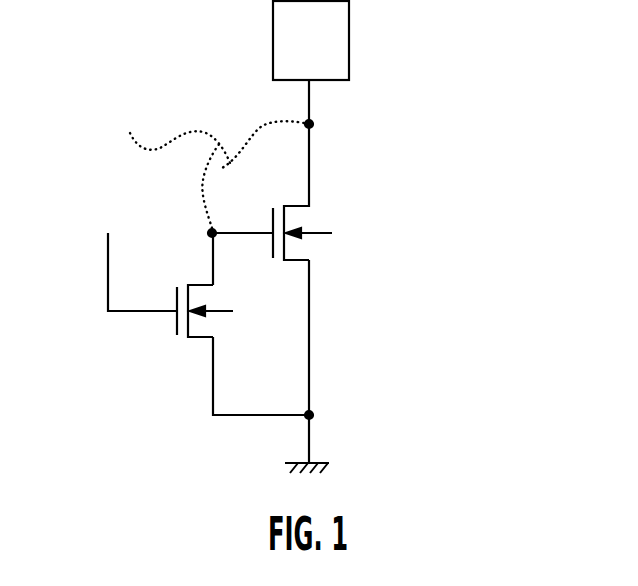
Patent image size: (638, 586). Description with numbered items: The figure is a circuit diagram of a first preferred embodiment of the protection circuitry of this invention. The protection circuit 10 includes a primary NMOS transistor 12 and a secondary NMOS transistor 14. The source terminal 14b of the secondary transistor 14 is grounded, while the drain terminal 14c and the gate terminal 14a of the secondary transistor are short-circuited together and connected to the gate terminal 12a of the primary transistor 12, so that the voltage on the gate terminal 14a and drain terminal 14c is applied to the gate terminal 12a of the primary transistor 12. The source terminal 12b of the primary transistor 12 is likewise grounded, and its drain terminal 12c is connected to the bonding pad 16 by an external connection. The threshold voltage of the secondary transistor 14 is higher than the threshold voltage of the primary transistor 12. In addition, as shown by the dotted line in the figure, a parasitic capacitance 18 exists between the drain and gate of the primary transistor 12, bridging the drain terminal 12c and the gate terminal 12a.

The protection circuit 10 is at (390, 191).
The primary NMOS transistor 12 is at (303, 248).
The gate terminal of the primary transistor 12a is at (243, 235).
The source terminal of the primary transistor 12b is at (310, 380).
The drain terminal of the primary transistor 12c is at (309, 105).
The secondary NMOS transistor 14 is at (197, 338).
The gate terminal of the secondary transistor 14a is at (130, 311).
The source terminal of the secondary transistor 14b is at (212, 388).
The drain terminal of the secondary transistor 14c is at (210, 257).
The bonding pad 16 is at (337, 42).
The parasitic capacitance 18 is at (206, 167).